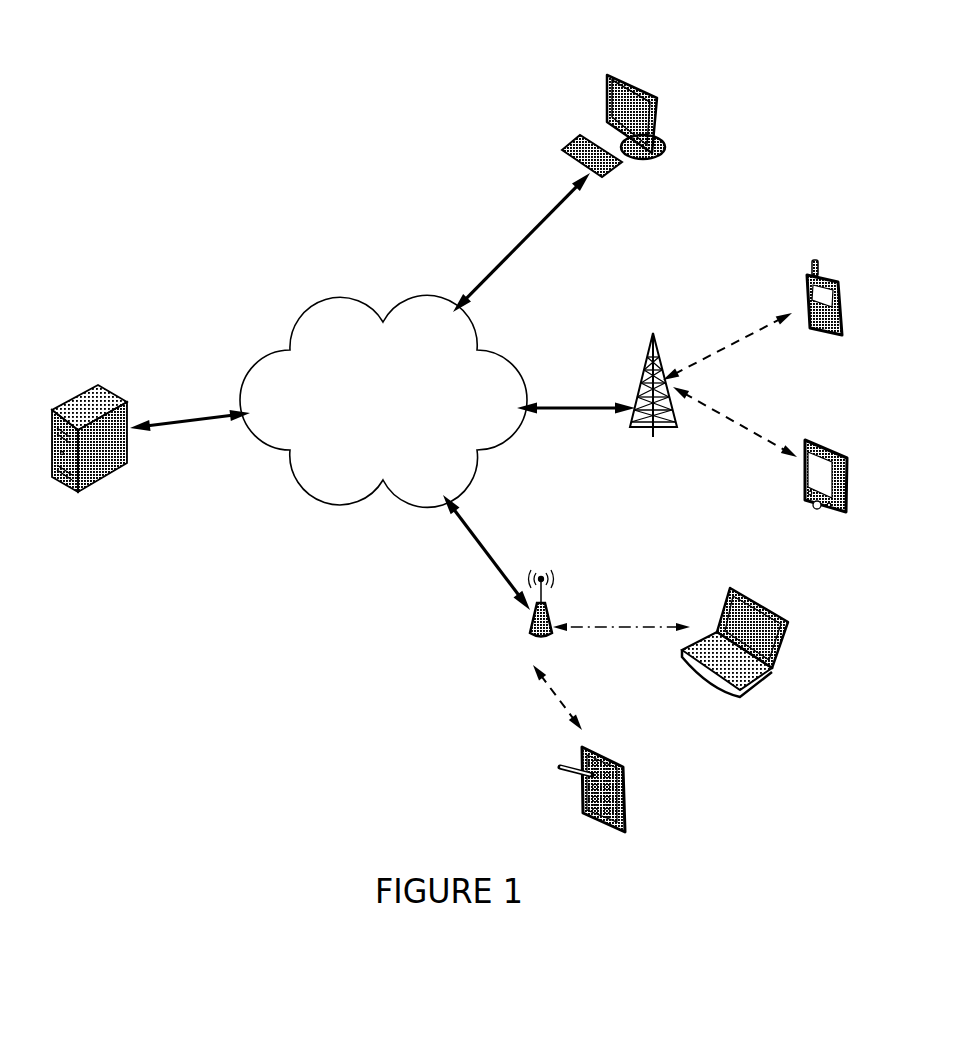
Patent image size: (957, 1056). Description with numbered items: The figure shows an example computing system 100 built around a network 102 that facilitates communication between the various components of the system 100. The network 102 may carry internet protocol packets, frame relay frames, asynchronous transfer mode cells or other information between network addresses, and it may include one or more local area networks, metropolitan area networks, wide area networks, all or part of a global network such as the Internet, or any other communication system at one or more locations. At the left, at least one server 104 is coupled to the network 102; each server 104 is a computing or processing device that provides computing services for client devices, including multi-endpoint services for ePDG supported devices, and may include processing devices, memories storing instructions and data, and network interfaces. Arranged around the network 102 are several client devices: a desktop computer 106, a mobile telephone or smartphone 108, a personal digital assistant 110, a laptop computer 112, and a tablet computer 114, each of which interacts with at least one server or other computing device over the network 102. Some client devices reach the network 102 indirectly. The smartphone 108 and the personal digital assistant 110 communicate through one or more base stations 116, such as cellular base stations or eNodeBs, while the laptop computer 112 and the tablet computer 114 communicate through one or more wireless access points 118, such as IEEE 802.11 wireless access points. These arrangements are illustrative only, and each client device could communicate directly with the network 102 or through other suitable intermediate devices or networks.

The system 100 is at (211, 161).
The network 102 is at (298, 310).
The server 104 is at (68, 402).
The desktop computer 106 is at (607, 75).
The mobile telephone or smartphone 108 is at (843, 282).
The personal digital assistant (PDA) 110 is at (842, 452).
The laptop computer 112 is at (788, 633).
The tablet computer 114 is at (630, 782).
The base station 116 is at (677, 423).
The wireless access point 118 is at (552, 613).